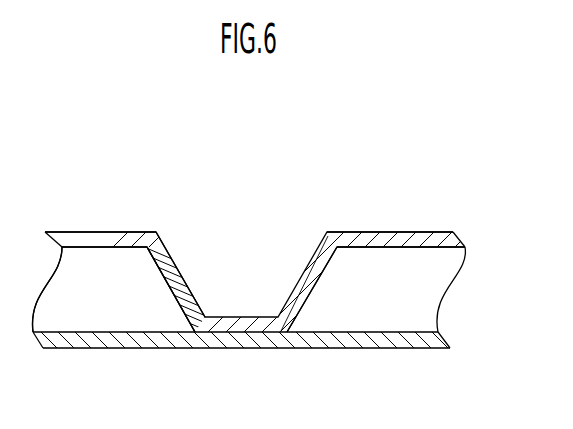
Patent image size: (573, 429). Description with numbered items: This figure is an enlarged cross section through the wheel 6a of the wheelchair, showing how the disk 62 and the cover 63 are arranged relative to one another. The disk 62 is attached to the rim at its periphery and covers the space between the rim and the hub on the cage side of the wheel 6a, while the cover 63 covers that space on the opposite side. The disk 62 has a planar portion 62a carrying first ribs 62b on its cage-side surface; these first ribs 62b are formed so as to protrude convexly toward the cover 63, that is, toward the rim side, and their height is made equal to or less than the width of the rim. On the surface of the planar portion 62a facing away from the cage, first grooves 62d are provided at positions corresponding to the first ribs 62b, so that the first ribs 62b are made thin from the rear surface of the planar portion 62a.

The wheel 6a is at (96, 173).
The disk 62 is at (484, 210).
The planar portion 62a is at (131, 231).
The first ribs 62b is at (168, 314).
The first grooves 62d is at (181, 272).
The cover 63 is at (375, 348).